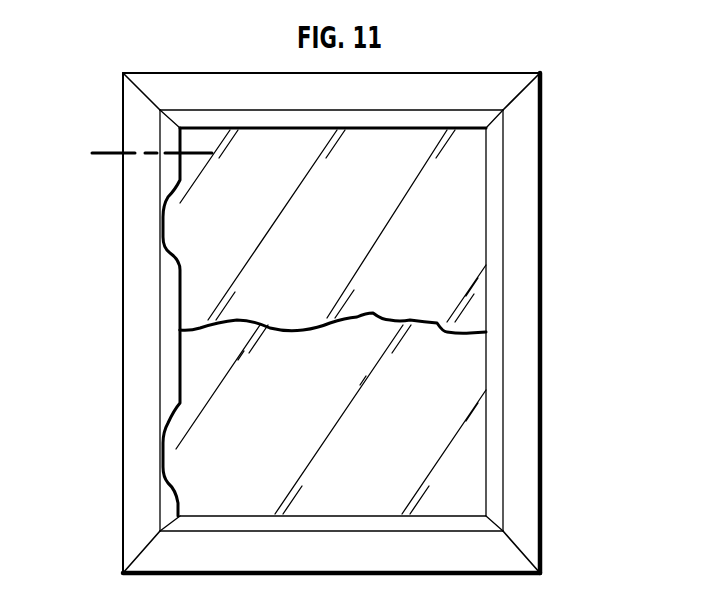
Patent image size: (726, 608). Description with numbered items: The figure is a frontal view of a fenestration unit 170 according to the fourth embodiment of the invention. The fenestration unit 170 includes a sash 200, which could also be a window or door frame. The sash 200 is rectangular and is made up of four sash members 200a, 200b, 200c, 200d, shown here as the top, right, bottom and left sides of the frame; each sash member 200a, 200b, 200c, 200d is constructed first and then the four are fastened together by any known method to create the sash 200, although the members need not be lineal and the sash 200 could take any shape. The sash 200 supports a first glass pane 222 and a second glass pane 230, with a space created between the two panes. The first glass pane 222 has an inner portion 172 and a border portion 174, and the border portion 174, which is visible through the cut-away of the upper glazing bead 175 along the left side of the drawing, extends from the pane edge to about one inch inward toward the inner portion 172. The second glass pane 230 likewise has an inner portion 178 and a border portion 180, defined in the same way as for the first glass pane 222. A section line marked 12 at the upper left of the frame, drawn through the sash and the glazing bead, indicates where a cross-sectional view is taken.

The section line 12- 12 is at (205, 165).
The fenestration unit 170 is at (346, 325).
The inner portion 172 is at (318, 433).
The border portion 174 is at (165, 447).
The upper glazing bead 175 is at (376, 126).
The inner portion 178 is at (318, 295).
The border portion 180 is at (165, 233).
The sash 200 is at (331, 340).
The sash member 200a is at (532, 290).
The sash member 200b is at (320, 561).
The sash member 200c is at (126, 349).
The sash member 200d is at (417, 74).
The first glass pane 222 is at (458, 429).
The second glass pane 230 is at (449, 255).